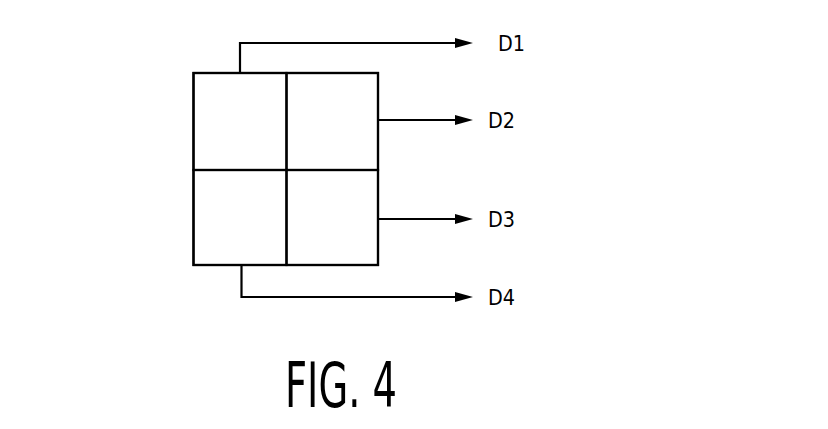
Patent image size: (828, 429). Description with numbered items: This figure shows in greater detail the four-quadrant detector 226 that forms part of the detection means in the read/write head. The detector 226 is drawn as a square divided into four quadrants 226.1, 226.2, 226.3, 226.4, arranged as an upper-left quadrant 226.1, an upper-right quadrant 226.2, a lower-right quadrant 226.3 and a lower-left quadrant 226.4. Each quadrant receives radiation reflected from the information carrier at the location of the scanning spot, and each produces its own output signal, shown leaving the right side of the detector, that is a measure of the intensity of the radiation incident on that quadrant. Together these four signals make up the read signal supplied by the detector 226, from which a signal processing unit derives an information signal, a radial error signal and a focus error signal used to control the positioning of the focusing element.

The four-quadrant detector 226 is at (153, 168).
The first quadrant 226.1 is at (206, 109).
The second quadrant 226.2 is at (378, 92).
The third quadrant 226.3 is at (378, 250).
The fourth quadrant 226.4 is at (206, 232).